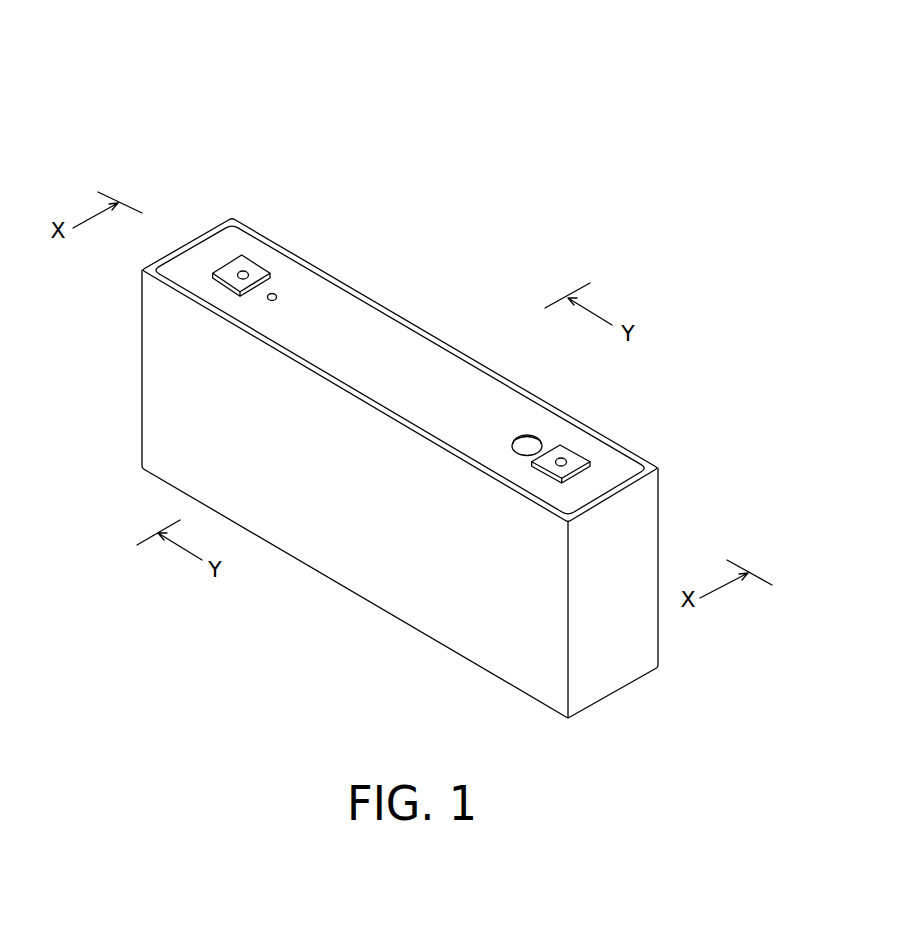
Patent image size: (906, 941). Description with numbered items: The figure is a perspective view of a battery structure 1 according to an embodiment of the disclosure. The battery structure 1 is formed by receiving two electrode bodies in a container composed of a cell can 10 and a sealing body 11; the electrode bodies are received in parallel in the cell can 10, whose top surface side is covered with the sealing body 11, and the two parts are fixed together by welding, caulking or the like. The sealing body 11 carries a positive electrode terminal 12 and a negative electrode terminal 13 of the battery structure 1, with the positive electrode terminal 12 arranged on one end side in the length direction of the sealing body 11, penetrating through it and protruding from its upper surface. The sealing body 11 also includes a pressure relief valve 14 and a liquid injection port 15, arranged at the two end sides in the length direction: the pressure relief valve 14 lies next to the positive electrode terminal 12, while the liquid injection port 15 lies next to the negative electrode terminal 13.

The battery structure 1 is at (400, 369).
The cell can 10 is at (335, 557).
The sealing body 11 is at (387, 333).
The positive electrode terminal 12 is at (570, 448).
The negative electrode terminal 13 is at (247, 258).
The pressure relief valve 14 is at (528, 437).
The liquid injection port 15 is at (277, 292).